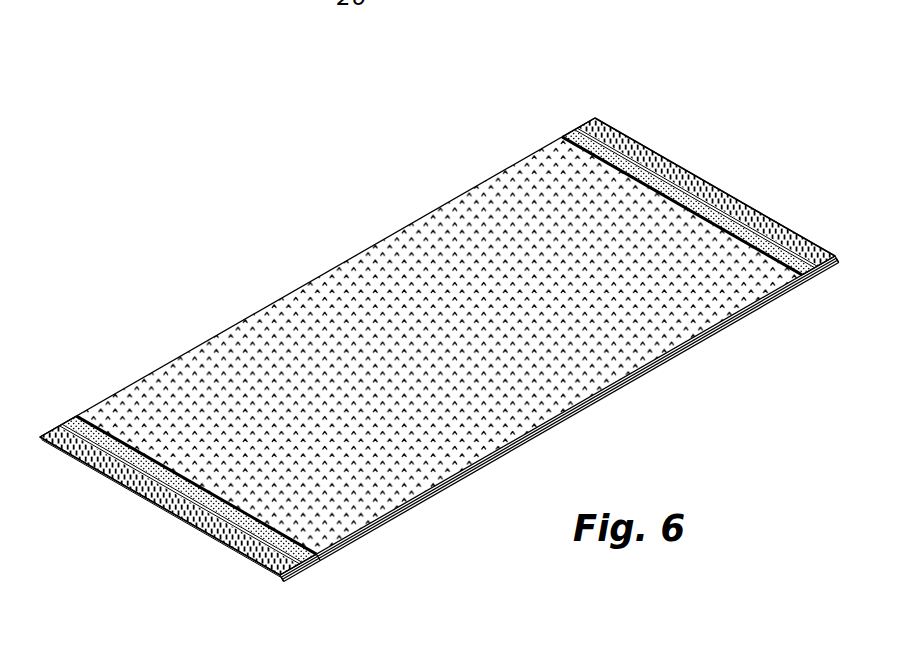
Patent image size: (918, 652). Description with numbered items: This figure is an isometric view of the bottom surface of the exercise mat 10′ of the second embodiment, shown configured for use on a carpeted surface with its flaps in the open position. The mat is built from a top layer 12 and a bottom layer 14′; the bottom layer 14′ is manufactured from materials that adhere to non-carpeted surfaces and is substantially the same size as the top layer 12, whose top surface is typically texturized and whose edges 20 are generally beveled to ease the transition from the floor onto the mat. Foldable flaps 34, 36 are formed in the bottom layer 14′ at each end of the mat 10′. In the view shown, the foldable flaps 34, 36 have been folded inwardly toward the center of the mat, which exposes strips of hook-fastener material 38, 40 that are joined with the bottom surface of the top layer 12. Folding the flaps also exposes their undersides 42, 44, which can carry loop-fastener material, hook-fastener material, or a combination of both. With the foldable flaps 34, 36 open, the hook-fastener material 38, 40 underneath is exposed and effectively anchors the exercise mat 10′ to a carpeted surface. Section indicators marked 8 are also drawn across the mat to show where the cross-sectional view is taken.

The exercise mat 10′ is at (206, 299).
The top layer 12 is at (653, 367).
The bottom layer 14′ is at (460, 377).
The edges 20 is at (128, 487).
The foldable flap 34 is at (78, 417).
The foldable flap 36 is at (672, 198).
The strip of hook-fastener material 38 is at (285, 568).
The strip of hook-fastener material 40 is at (747, 208).
The underside of foldable flap 42 is at (313, 558).
The underside of foldable flap 44 is at (790, 272).
The section line for FIG. 8 is at (667, 125).